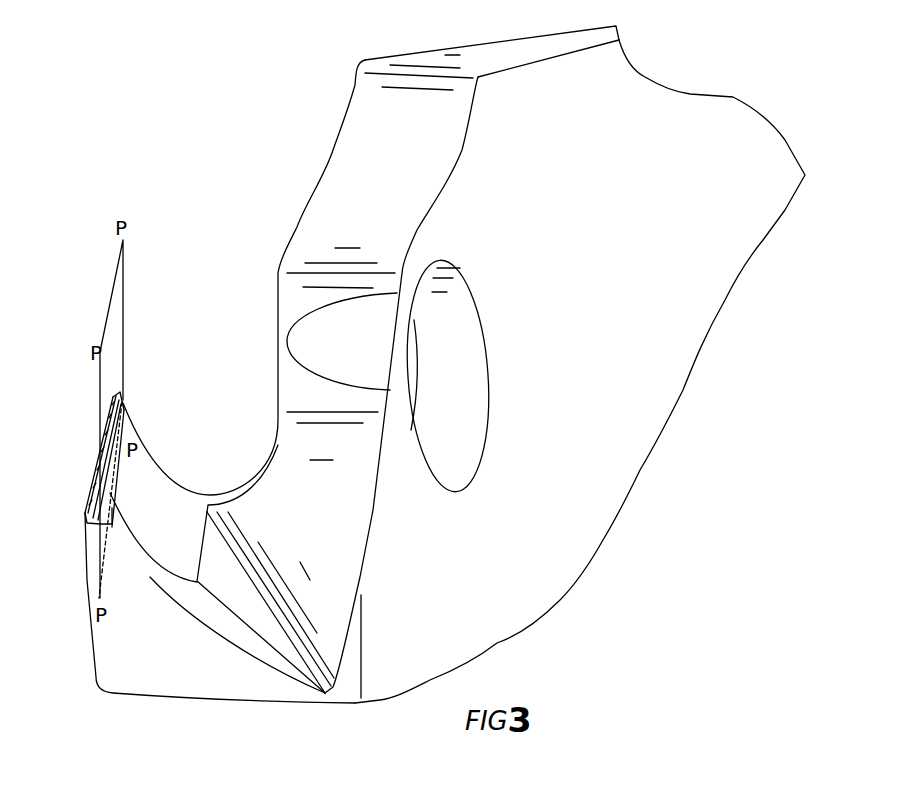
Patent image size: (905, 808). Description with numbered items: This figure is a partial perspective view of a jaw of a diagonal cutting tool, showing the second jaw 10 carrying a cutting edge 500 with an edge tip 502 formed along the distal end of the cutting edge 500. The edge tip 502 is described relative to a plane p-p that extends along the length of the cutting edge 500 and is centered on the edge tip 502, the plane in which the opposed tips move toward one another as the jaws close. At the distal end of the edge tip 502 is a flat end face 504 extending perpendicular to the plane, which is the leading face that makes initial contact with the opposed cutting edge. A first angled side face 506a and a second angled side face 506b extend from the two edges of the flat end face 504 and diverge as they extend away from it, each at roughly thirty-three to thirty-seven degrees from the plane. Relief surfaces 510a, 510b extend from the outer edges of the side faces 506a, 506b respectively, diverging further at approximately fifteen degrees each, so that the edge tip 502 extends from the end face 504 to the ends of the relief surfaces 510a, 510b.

The second jaw 10 is at (478, 618).
The cutting edge 500 is at (114, 477).
The edge tip 502 is at (128, 404).
The flat end face 504 is at (115, 455).
The first angled side face 506a is at (100, 496).
The second angled side face 506b is at (122, 396).
The first relief surface 510a is at (87, 513).
The second relief surface 510b is at (110, 503).